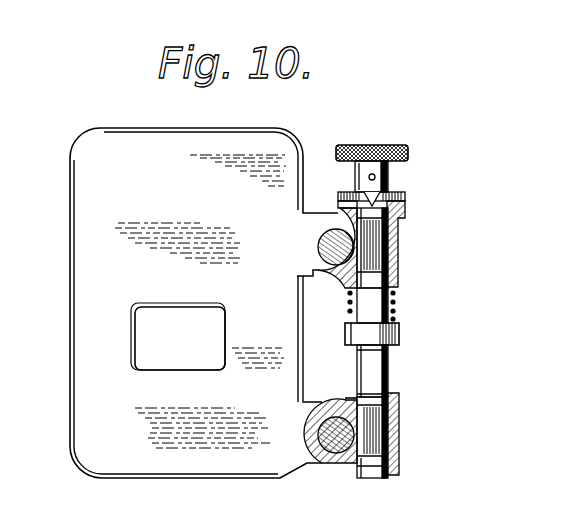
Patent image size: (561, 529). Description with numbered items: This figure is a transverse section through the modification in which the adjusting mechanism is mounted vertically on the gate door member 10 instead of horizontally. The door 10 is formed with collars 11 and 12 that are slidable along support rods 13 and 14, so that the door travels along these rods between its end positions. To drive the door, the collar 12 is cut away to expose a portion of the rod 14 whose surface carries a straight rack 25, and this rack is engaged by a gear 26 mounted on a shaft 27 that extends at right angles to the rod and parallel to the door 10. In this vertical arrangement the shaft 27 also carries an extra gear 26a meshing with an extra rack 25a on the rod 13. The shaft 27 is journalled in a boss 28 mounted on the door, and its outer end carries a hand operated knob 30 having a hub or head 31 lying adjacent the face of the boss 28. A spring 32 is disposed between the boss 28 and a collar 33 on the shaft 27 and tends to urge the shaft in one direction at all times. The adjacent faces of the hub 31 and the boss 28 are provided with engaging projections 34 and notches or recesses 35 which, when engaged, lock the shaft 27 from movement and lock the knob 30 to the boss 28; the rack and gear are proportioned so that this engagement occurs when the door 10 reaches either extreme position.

The member 10 is at (204, 303).
The collar 11 is at (316, 226).
The collar 12 is at (327, 466).
The rod 13 is at (322, 252).
The rod 14 is at (315, 433).
The rack 25 is at (346, 398).
The extra rack 25a is at (312, 275).
The gear 26 is at (400, 437).
The extra gear 26a is at (400, 240).
The shaft 27 is at (376, 376).
The boss 28 is at (400, 267).
The knob 30 is at (382, 147).
The hub 31 is at (405, 197).
The spring 32 is at (397, 307).
The collar 33 is at (400, 339).
The projections 34 is at (389, 184).
The notches or recesses 35 is at (338, 203).